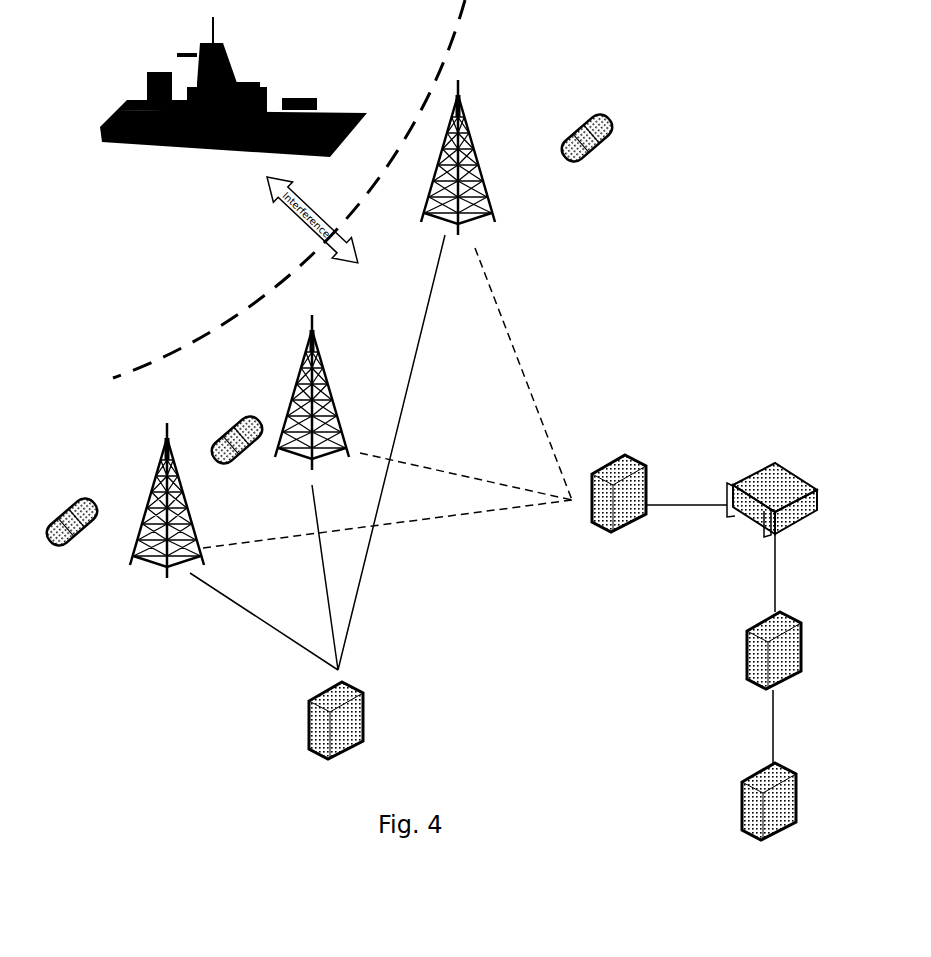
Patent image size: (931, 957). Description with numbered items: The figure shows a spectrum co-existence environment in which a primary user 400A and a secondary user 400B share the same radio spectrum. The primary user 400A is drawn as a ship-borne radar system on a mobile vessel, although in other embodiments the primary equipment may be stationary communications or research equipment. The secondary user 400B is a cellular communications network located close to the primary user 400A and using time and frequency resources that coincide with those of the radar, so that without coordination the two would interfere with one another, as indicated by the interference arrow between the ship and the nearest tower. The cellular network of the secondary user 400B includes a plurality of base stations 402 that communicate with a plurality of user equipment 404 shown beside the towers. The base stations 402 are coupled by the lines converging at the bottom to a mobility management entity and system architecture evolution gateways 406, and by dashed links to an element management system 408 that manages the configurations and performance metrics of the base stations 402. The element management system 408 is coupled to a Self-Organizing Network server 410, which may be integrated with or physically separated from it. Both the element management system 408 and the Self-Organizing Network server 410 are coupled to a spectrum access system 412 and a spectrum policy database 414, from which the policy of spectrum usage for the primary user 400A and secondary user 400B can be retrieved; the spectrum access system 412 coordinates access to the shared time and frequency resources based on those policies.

The primary user 400A is at (100, 126).
The secondary user 400B is at (545, 26).
The base station 402 is at (455, 93).
The user equipment 404 is at (592, 113).
The mobility management entity and system architecture evolution gateways 406 is at (307, 700).
The element management system 408 is at (612, 455).
The Self-Organizing Network server 410 is at (773, 465).
The spectrum access system 412 is at (746, 631).
The spectrum policy database 414 is at (744, 781).